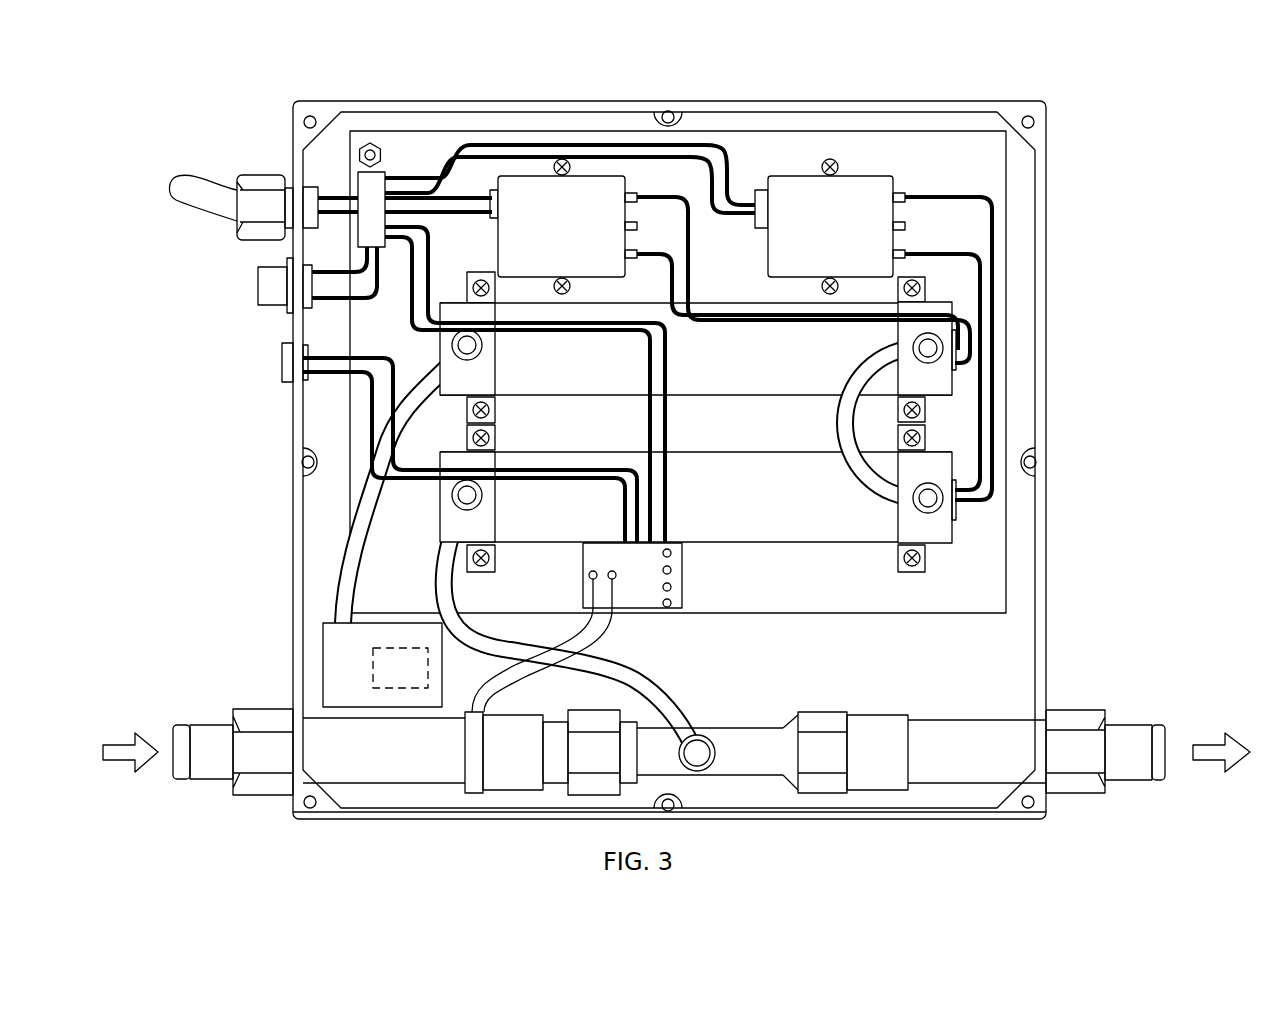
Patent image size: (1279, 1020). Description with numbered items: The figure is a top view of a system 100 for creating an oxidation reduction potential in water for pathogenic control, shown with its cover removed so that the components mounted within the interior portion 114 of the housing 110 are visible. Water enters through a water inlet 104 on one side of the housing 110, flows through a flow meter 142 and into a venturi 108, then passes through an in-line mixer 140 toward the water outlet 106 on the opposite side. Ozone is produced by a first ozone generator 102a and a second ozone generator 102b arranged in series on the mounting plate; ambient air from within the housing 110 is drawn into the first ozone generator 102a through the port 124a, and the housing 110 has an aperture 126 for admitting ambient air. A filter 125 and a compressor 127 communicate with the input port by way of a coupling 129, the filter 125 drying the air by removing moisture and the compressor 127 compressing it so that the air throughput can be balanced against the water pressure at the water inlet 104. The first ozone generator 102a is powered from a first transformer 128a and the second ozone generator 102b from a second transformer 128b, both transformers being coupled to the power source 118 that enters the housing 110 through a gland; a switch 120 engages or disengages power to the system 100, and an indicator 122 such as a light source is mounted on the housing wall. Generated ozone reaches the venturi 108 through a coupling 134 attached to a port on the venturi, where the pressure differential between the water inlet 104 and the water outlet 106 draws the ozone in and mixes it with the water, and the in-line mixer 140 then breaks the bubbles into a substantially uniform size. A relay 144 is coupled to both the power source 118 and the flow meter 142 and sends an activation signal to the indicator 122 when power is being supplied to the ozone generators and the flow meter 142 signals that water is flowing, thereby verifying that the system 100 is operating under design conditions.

The system 100 is at (1168, 188).
The first ozone generator 102a is at (942, 377).
The second ozone generator 102b is at (942, 527).
The water inlet 104 is at (212, 753).
The water outlet 106 is at (1123, 767).
The venturi 108 is at (747, 758).
The housing 110 is at (1040, 617).
The interior portion 114 is at (1003, 665).
The power source 118 is at (257, 178).
The switch 120 is at (258, 287).
The indicator 122 is at (282, 364).
The port 124a is at (452, 344).
The filter 125 is at (373, 680).
The aperture 126 is at (503, 817).
The compressor 127 is at (323, 653).
The first transformer 128a is at (533, 198).
The second transformer 128b is at (795, 188).
The coupling 129 is at (365, 503).
The coupling 134 is at (657, 687).
The in-line mixer 140 is at (978, 743).
The flow meter 142 is at (472, 743).
The relay 144 is at (600, 560).